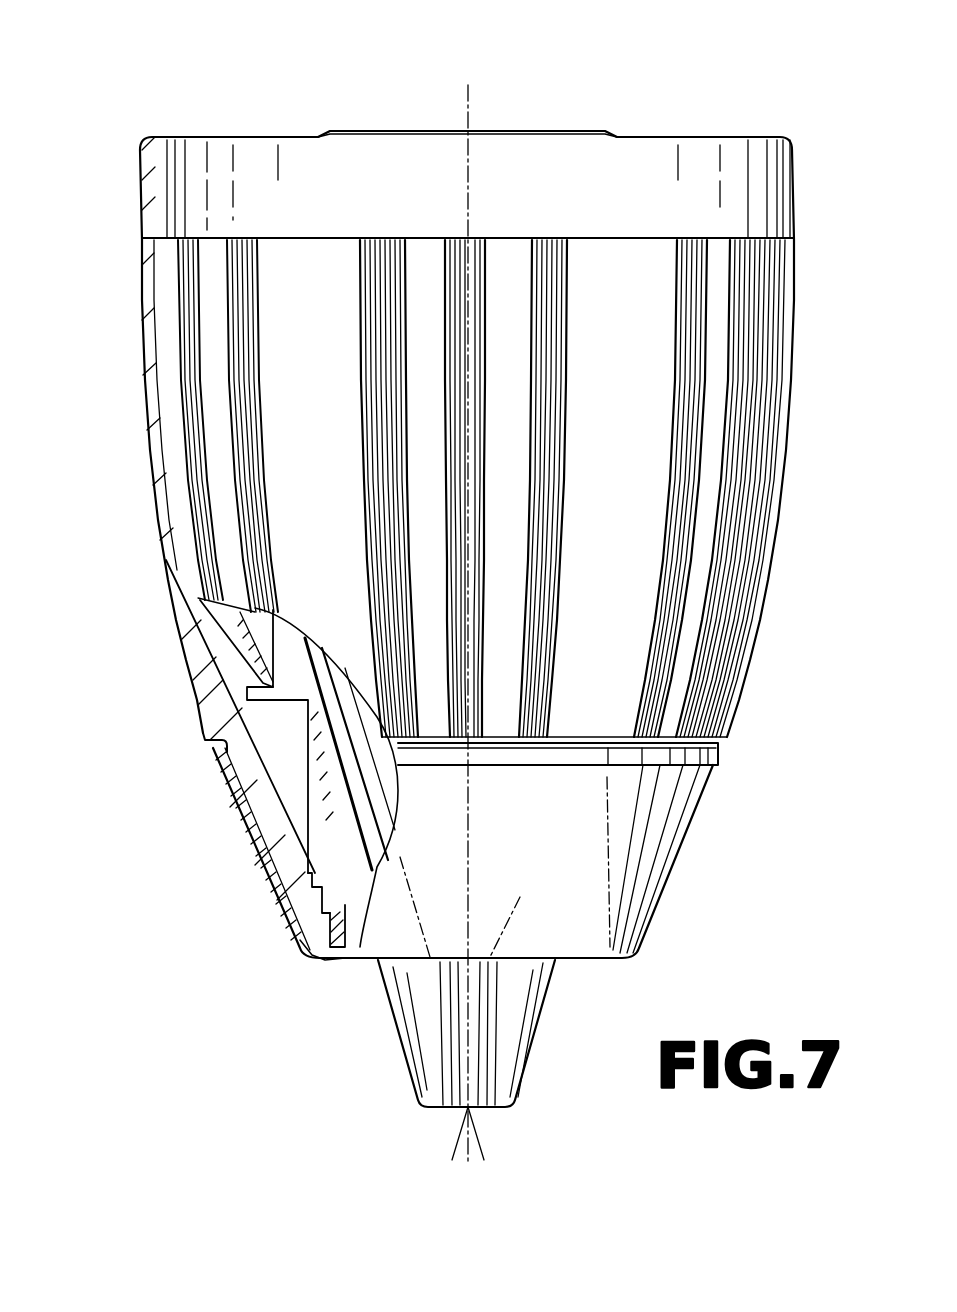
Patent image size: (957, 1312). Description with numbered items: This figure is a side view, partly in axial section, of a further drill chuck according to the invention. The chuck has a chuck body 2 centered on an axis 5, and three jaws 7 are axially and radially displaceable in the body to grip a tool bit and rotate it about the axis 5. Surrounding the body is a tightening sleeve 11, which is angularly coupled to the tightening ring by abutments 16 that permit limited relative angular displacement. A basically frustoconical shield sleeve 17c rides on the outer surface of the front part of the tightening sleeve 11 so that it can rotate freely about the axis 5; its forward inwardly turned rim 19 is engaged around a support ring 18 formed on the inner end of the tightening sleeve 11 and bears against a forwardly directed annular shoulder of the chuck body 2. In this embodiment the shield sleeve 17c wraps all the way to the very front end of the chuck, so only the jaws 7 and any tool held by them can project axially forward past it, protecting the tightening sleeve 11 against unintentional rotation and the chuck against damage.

The axis 5 is at (470, 107).
The tightening sleeve 11 is at (647, 432).
The abutments 16 is at (250, 648).
The shield sleeve 17c is at (673, 825).
The support ring 18 is at (308, 900).
The chuck body 2 is at (322, 912).
The rim 19 is at (322, 963).
The jaws 7 is at (507, 1048).